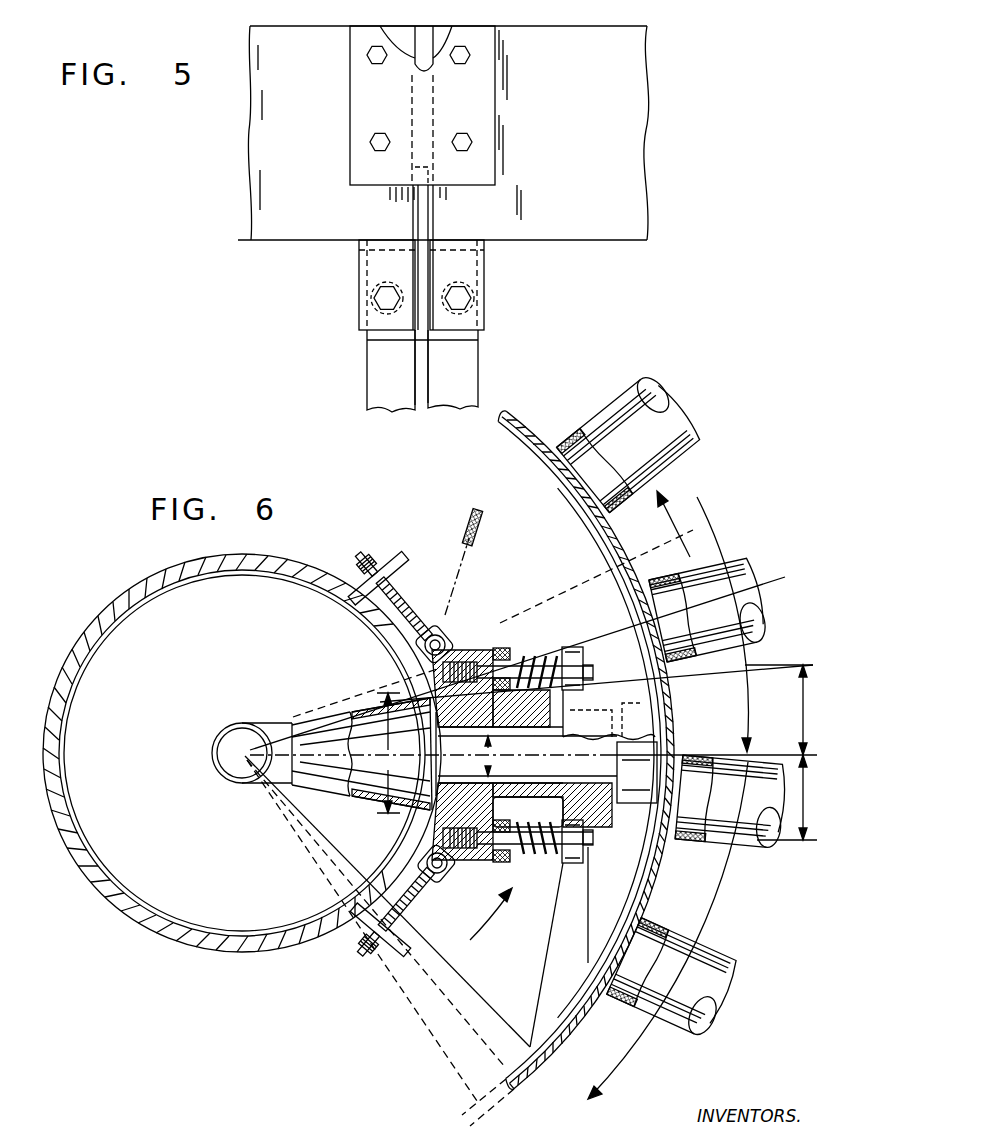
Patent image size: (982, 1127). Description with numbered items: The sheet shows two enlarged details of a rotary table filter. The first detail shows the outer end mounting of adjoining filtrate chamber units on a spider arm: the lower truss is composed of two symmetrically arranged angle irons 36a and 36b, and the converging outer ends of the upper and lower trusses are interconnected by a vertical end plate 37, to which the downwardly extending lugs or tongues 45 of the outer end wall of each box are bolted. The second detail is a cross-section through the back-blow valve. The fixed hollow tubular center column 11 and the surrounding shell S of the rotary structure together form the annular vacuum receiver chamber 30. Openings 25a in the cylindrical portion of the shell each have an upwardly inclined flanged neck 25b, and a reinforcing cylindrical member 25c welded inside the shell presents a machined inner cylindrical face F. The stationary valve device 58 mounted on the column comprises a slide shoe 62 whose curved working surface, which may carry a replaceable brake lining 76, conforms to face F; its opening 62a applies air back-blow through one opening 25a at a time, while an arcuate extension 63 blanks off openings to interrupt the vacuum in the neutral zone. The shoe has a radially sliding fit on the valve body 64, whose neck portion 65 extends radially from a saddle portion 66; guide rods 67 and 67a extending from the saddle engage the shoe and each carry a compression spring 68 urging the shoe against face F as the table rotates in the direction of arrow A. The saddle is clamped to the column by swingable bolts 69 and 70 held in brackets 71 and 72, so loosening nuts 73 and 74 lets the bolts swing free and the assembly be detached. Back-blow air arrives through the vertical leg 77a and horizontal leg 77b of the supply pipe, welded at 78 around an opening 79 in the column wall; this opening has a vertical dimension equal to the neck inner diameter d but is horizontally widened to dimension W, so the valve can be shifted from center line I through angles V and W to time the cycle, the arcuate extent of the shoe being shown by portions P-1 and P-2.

In FIG. 6, the center column 11 is at (73, 827).
In FIG. 6, the openings 25a is at (580, 492).
In FIG. 6, the flanged neck 25b is at (683, 447).
In FIG. 6, the reinforcing cylindrical member 25c is at (613, 568).
In FIG. 6, the annular vacuum receiver chamber 30 is at (534, 594).
In FIG. 5, the angle iron 36a is at (382, 375).
In FIG. 5, the angle iron 36b is at (448, 397).
In FIG. 5, the vertical end plate 37 is at (387, 337).
In FIG. 5, the lugs or tongues 45 is at (363, 275).
In FIG. 6, the stationary valve device 58 is at (481, 925).
In FIG. 6, the slide shoe 62 is at (627, 727).
In FIG. 6, the opening 62a is at (643, 758).
In FIG. 6, the arcuate extension 63 is at (585, 985).
In FIG. 6, the valve body 64 is at (493, 701).
In FIG. 6, the neck portion 65 is at (530, 718).
In FIG. 6, the saddle portion 66 is at (463, 652).
In FIG. 6, the guide rod 67 is at (587, 850).
In FIG. 6, the guide rod 67a is at (614, 637).
In FIG. 6, the compression spring 68 is at (527, 660).
In FIG. 6, the swingable bolt 69 is at (417, 905).
In FIG. 6, the swingable bolt 70 is at (432, 628).
In FIG. 6, the bracket 71 is at (407, 940).
In FIG. 6, the bracket 72 is at (400, 578).
In FIG. 6, the nut 73 is at (390, 940).
In FIG. 6, the nut 74 is at (378, 572).
In FIG. 6, the brake lining 76 is at (533, 1063).
In FIG. 6, the vertical leg 77a is at (212, 747).
In FIG. 6, the horizontal leg 77b is at (337, 787).
In FIG. 6, the weld 78 is at (427, 813).
In FIG. 6, the opening 79 is at (438, 740).
In FIG. 6, the arrow A is at (678, 520).
In FIG. 6, the inner cylindrical face F is at (605, 533).
In FIG. 6, the shell S is at (637, 553).
In FIG. 6, the angle V is at (816, 696).
In FIG. 6, the dimension W is at (602, 752).
In FIG. 6, the center line I is at (781, 736).
In FIG. 6, the inner diameter d is at (487, 756).
In FIG. 6, the arcuate portion P-1 is at (744, 668).
In FIG. 6, the arcuate portion P-2 is at (720, 908).